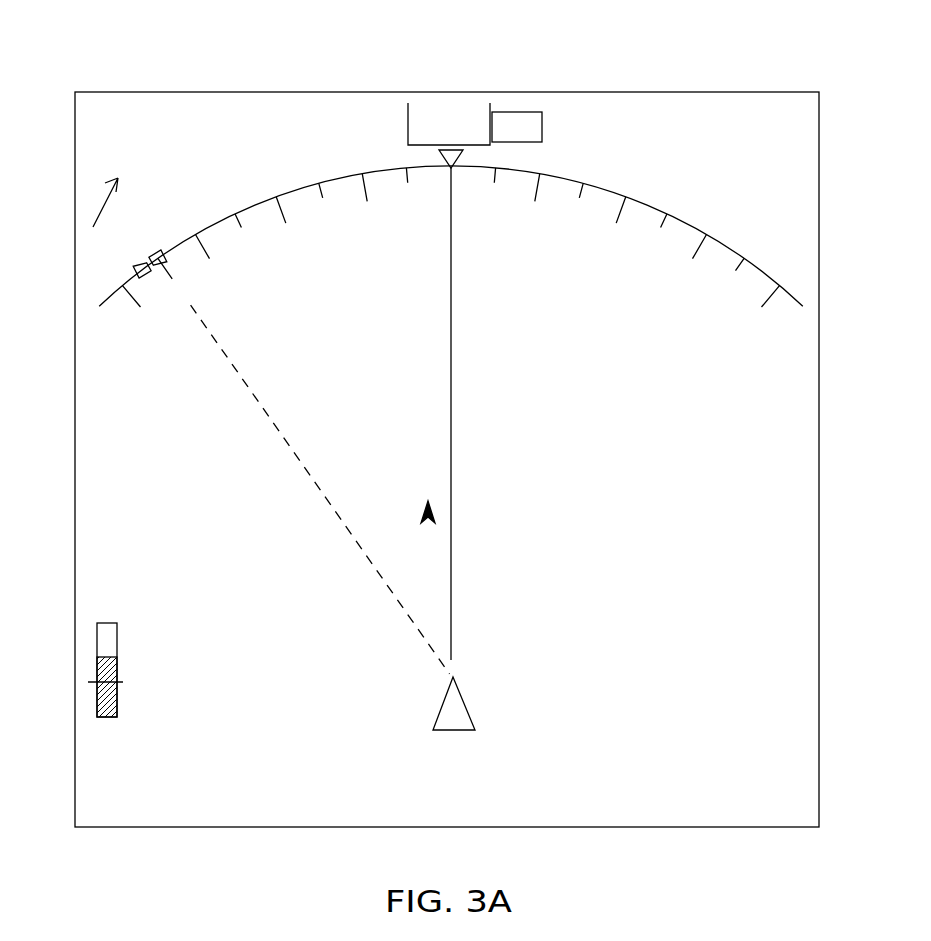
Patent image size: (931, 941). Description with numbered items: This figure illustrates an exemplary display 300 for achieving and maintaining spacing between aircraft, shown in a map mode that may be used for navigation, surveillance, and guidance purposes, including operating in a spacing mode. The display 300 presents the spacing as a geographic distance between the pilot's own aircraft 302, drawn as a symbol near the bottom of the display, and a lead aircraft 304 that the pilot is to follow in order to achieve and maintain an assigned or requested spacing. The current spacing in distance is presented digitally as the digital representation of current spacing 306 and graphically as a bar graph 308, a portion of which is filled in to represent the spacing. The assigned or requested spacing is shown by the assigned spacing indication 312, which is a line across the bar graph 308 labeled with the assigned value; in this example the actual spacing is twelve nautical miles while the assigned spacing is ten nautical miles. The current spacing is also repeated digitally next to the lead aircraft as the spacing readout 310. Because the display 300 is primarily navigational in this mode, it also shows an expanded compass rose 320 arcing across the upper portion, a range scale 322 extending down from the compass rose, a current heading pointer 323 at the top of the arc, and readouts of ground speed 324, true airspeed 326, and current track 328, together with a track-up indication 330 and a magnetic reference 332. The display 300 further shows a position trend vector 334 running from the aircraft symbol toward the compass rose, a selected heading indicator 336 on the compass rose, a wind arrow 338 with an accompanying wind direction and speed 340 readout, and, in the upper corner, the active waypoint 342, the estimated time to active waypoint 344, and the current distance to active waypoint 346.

The display 300 is at (642, 73).
The pilot's own aircraft 302 is at (479, 714).
The lead aircraft 304 is at (421, 494).
The digital representation of current spacing 306 is at (110, 597).
The bar graph 308 is at (118, 640).
The digital spacing readout proximate to lead aircraft 310 is at (361, 517).
The assigned spacing indication 312 is at (181, 681).
The expanded compass rose 320 is at (603, 190).
The range scale 322 is at (452, 411).
The current heading pointer 323 is at (438, 164).
The ground speed 324 is at (118, 97).
The true airspeed 326 is at (203, 97).
The current track 328 is at (447, 108).
The track-up indication 330 is at (372, 108).
The magnetic reference 332 is at (520, 112).
The position trend vector 334 is at (415, 623).
The selected heading indicator 336 is at (141, 262).
The wind arrow 338 is at (105, 205).
The wind direction and speed 340 is at (73, 140).
The active waypoint 342 is at (750, 107).
The estimated time to active waypoint 344 is at (784, 141).
The current distance to active waypoint 346 is at (774, 176).